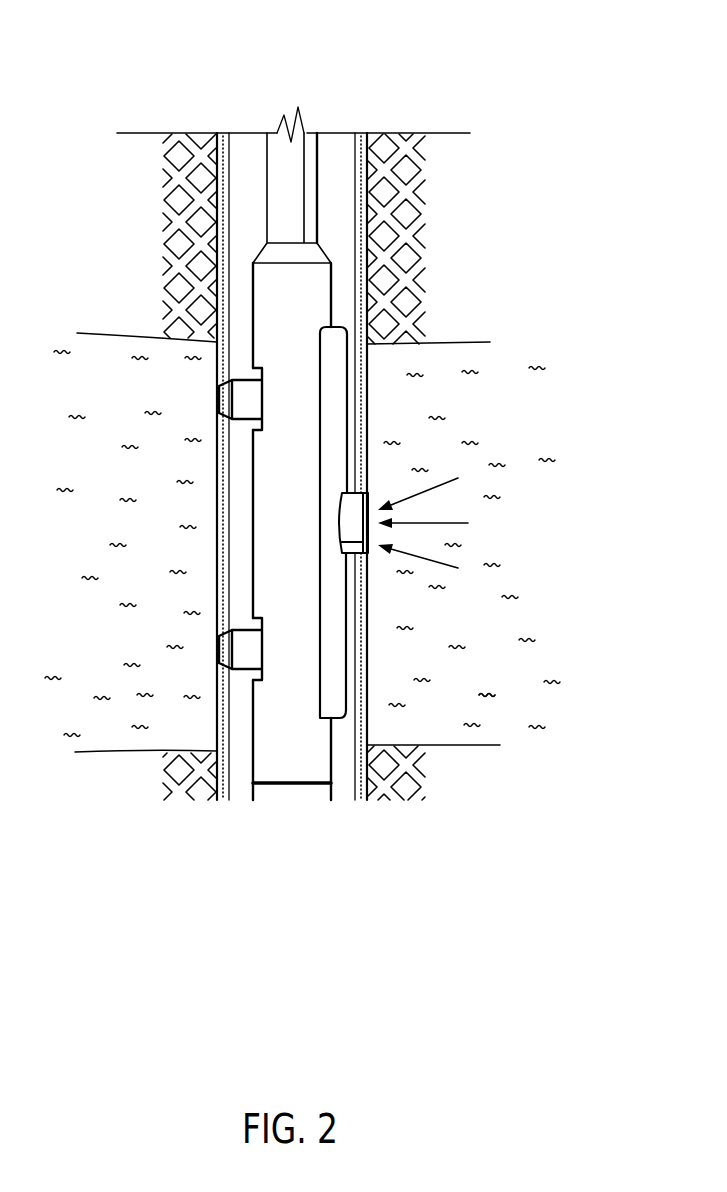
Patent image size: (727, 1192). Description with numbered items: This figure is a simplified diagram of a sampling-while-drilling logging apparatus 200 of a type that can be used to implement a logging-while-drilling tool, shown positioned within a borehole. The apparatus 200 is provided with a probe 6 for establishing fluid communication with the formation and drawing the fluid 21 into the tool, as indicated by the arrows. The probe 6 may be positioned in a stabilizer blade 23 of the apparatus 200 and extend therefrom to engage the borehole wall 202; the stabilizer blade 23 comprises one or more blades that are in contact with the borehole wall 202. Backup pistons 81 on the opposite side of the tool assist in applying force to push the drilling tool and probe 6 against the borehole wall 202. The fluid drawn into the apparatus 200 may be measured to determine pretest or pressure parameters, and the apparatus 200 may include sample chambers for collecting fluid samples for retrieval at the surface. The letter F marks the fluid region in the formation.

The sampling-while-drilling logging apparatus 200 is at (88, 77).
The borehole wall 202 is at (366, 225).
The backup pistons 81 is at (222, 398).
The stabilizer blade 23 is at (333, 422).
The fluid 21 is at (515, 435).
The probe 6 is at (357, 521).
The formation fluid F is at (491, 675).